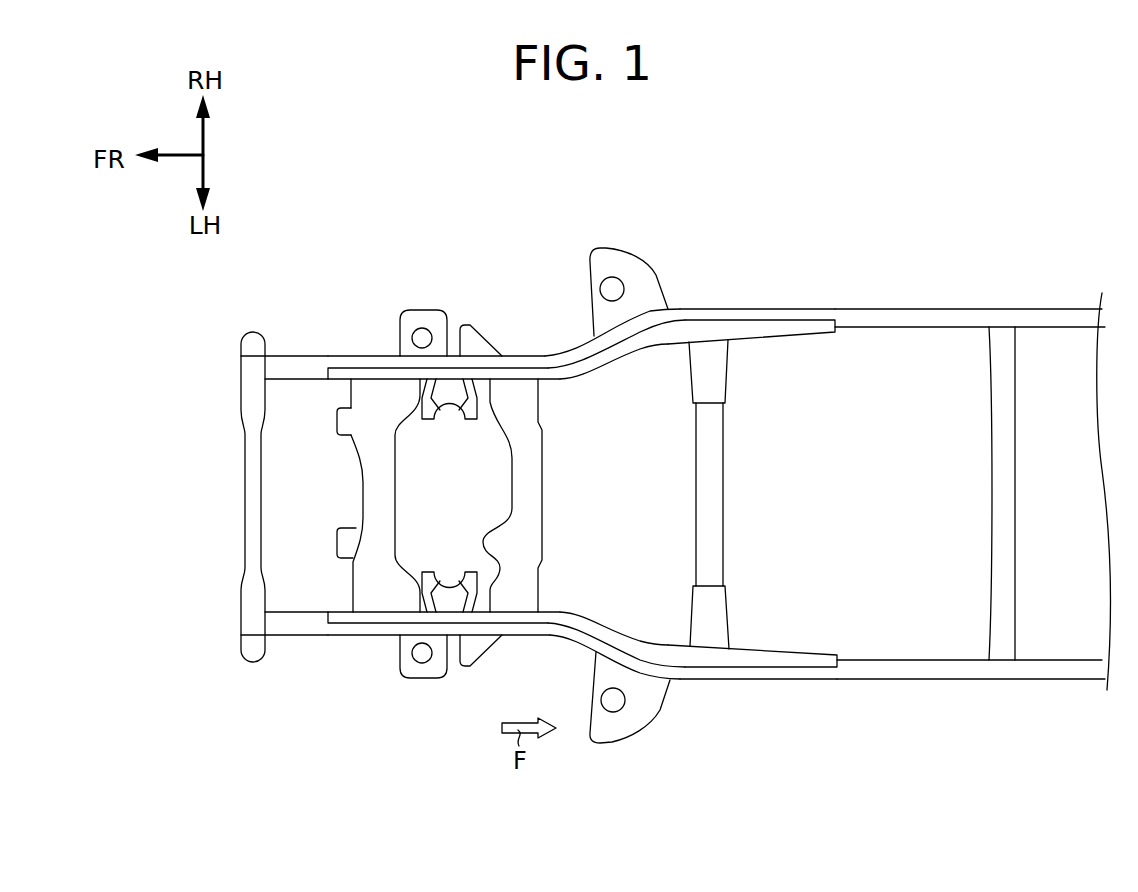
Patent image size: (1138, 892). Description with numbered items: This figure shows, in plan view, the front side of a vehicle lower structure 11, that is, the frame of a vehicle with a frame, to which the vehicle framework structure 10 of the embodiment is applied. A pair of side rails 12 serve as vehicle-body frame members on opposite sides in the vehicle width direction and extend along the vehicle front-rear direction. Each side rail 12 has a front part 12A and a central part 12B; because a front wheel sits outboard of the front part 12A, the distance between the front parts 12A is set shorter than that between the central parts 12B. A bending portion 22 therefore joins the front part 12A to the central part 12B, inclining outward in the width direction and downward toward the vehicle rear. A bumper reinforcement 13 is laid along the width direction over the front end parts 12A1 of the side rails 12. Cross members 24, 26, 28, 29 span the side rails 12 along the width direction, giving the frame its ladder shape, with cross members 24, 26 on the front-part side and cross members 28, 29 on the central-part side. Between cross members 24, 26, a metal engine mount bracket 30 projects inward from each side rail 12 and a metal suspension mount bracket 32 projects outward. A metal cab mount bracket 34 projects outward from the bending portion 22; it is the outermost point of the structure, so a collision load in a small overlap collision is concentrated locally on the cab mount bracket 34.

The vehicle framework structure 10 is at (656, 252).
The vehicle lower structure 11 is at (768, 268).
The side rail 12 is at (922, 306).
The front part 12A is at (358, 354).
The front end part 12A1 is at (328, 368).
The central part 12B is at (823, 306).
The bumper reinforcement 13 is at (250, 496).
The bending portion 22 is at (577, 343).
The cross member 24 is at (392, 490).
The cross member 26 is at (546, 490).
The cross member 28 is at (724, 490).
The cross member 29 is at (1014, 490).
The engine mount bracket 30 is at (451, 404).
The suspension mount bracket 32 is at (422, 310).
The cab mount bracket 34 is at (604, 245).